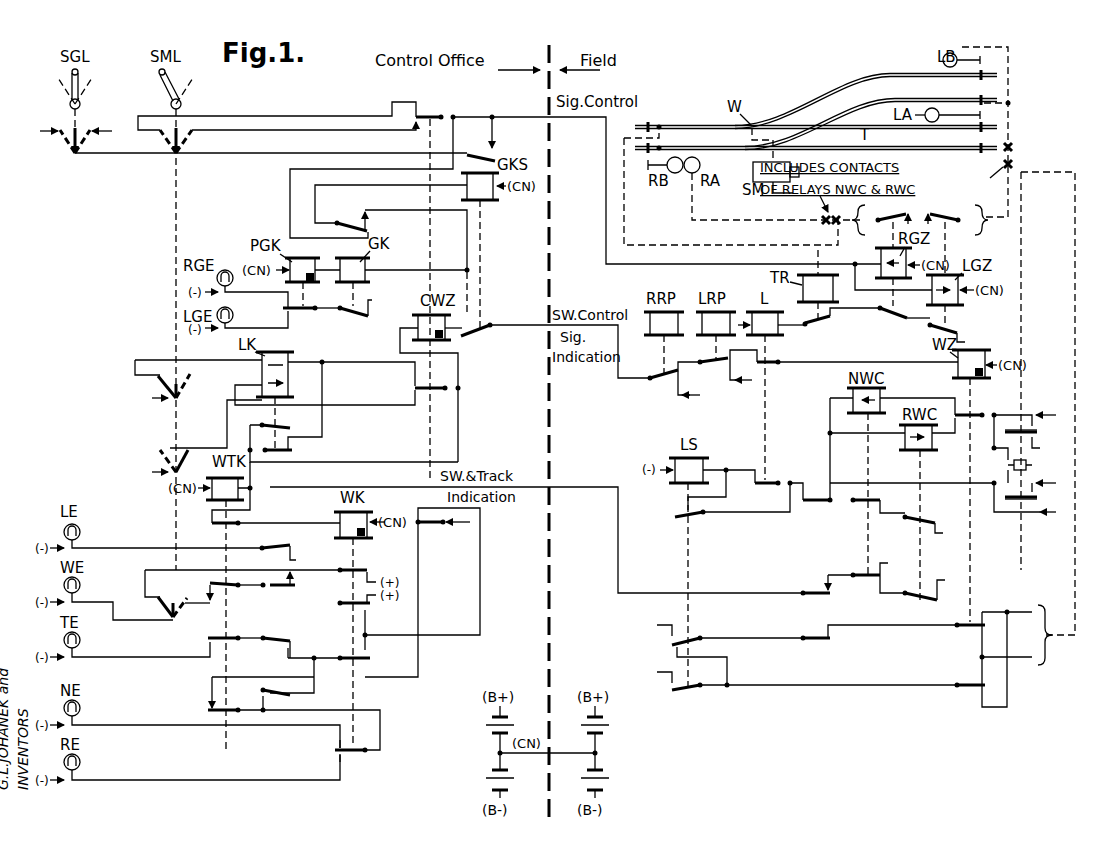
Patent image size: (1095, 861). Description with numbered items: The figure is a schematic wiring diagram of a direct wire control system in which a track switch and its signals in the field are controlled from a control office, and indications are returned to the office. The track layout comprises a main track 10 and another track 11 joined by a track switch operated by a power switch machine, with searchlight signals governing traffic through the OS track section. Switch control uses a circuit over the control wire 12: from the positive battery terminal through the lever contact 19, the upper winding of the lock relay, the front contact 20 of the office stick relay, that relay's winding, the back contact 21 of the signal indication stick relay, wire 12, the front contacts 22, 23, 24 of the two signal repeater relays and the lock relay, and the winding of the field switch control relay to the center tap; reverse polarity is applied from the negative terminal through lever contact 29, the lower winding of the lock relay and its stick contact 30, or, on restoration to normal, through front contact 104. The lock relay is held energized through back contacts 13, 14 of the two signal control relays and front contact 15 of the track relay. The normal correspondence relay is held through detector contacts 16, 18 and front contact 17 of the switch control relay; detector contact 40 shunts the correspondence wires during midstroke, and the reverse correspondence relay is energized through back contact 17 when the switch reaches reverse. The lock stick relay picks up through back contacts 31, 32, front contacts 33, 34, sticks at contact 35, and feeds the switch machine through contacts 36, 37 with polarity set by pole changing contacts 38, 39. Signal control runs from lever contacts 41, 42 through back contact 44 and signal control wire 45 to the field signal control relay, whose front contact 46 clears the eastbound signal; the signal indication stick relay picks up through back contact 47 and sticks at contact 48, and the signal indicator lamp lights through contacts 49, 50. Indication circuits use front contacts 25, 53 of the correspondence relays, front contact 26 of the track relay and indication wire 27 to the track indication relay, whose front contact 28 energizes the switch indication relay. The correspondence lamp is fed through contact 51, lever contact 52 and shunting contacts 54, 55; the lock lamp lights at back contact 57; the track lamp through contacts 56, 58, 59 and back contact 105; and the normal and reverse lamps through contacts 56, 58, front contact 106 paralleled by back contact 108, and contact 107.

The main track 10 is at (816, 137).
The track 11 is at (866, 110).
The control wire 12 is at (505, 325).
The back contact of relay LGZ 13 is at (950, 328).
The back contact of relay RGZ 14 is at (897, 314).
The front contact of relay TR 15 is at (820, 325).
The detector contact of switch machine SM 16 is at (1026, 430).
The contact of relay WZ 17 is at (938, 405).
The detector contact of switch machine SM 18 is at (1020, 500).
The contact of switch control lever SML 19 is at (186, 390).
The front contact of relay CWZ 20 is at (438, 400).
The contact of relay GKS 21 is at (485, 330).
The contact of relay RRP 22 is at (658, 384).
The front contact of relay LRP 23 is at (705, 358).
The front contact of relay L 24 is at (770, 362).
The front contact of relay NWC 25 is at (858, 572).
The front contact of relay TR 26 is at (808, 590).
The indication wire 27 is at (575, 487).
The front contact of relay WTK 28 is at (220, 524).
The contact of switch control lever SML 29 is at (162, 463).
The front contact of relay LK 30 is at (258, 425).
The back contact of relay RWC 31 is at (922, 518).
The back contact of relay NWC 32 is at (860, 503).
The front contact of relay TR 33 is at (815, 506).
The front contact of relay L 34 is at (770, 484).
The front contact of relay LS 35 is at (690, 516).
The front contact of relay LS 36 is at (692, 638).
The front contact of relay LS 37 is at (693, 690).
The pole changing contact of relay WZ 38 is at (960, 630).
The pole changing contact of relay WZ 39 is at (958, 690).
The detector contact of switch machine SM 40 is at (1024, 465).
The contact of signal control lever SGL 41 is at (70, 150).
The contact of switch control lever SML 42 is at (165, 138).
The back contact of relay CWZ 44 is at (420, 113).
The signal control wire 45 is at (516, 117).
The front contact of relay RGZ 46 is at (920, 236).
The back contact of relay GK 47 is at (345, 220).
The front contact of relay GKS 48 is at (481, 139).
The front contact of relay GK 49 is at (365, 313).
The front contact of relay PGK 50 is at (300, 320).
The contact of relay WK 51 is at (342, 606).
The contact of switch control lever SML 52 is at (242, 600).
The front contact of relay RWC 53 is at (918, 600).
The contact of relay WTK 54 is at (208, 586).
The contact of relay LK 55 is at (290, 585).
The contact of relay CWZ 56 is at (423, 592).
The back contact of relay LK 57 is at (288, 546).
The contact of relay WK 58 is at (320, 670).
The back contact of relay LK 59 is at (270, 650).
The front contact of relay LK 104 is at (353, 425).
The back contact of relay WTK 105 is at (235, 626).
The front contact of relay WTK 106 is at (208, 713).
The contact of relay WK 107 is at (340, 752).
The back contact of relay LK 108 is at (251, 692).